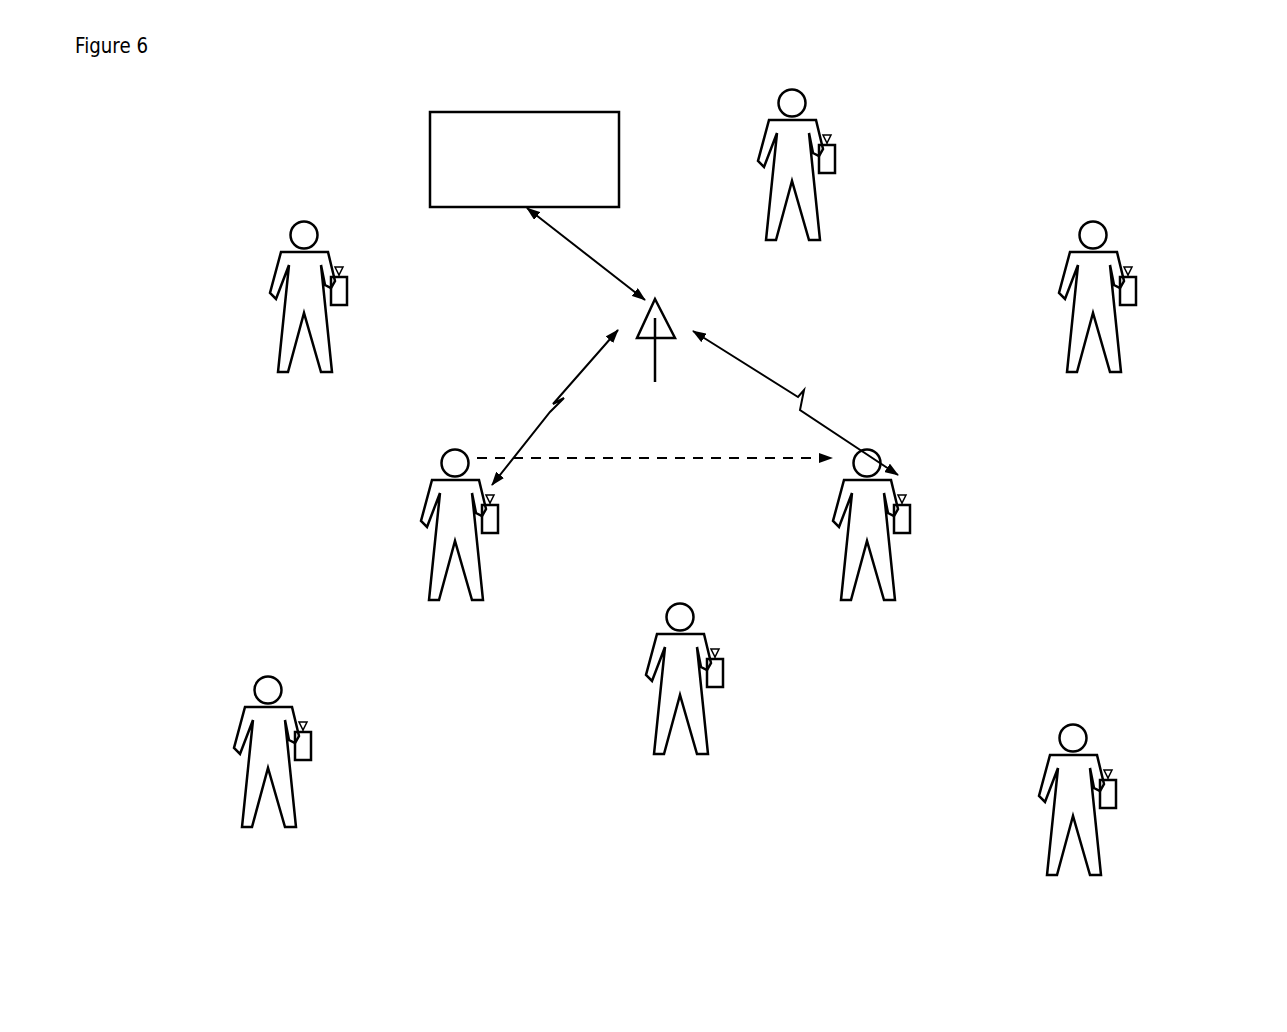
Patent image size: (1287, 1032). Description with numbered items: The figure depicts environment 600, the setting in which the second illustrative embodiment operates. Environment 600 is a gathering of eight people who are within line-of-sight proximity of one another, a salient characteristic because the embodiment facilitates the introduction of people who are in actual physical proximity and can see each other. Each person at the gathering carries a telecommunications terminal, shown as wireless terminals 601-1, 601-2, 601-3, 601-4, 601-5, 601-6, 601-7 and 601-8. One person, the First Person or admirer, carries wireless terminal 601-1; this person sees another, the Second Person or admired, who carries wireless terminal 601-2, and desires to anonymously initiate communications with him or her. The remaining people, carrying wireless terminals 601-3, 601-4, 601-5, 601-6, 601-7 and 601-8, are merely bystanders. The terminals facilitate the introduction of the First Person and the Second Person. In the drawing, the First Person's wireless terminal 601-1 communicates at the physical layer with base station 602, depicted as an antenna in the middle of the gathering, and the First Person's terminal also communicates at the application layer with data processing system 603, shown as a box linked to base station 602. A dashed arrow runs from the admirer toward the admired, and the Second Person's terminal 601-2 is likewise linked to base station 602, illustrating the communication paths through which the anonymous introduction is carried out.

The environment 600 is at (177, 213).
The wireless terminal 601-1 is at (505, 541).
The wireless terminal 601-2 is at (917, 541).
The wireless terminal 601-3 is at (351, 313).
The wireless terminal 601-4 is at (315, 768).
The wireless terminal 601-5 is at (727, 695).
The wireless terminal 601-6 is at (839, 181).
The wireless terminal 601-7 is at (1140, 313).
The wireless terminal 601-8 is at (1120, 816).
The base station 602 is at (658, 358).
The data processing system 603 is at (619, 153).